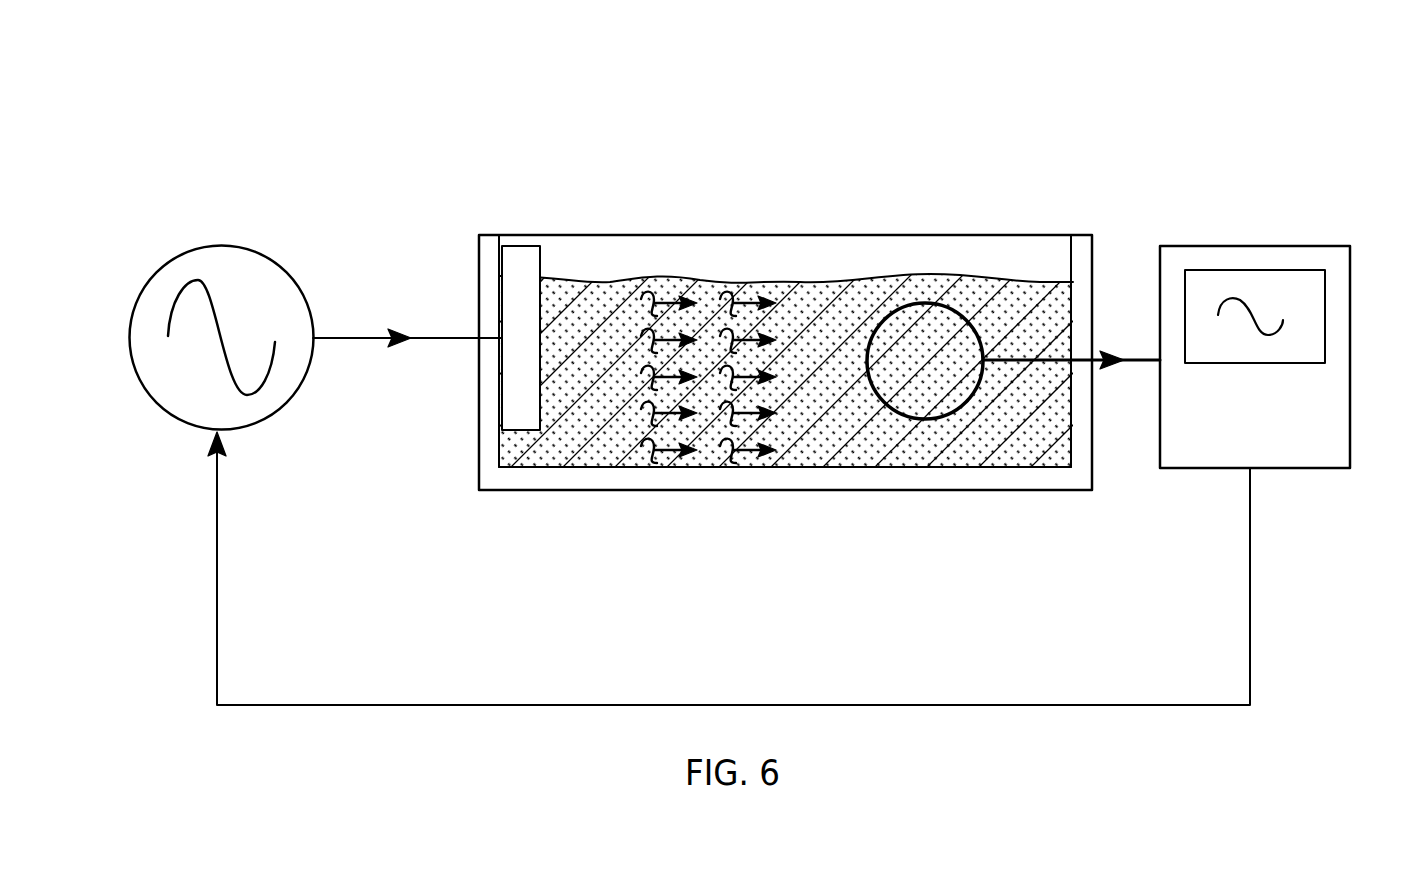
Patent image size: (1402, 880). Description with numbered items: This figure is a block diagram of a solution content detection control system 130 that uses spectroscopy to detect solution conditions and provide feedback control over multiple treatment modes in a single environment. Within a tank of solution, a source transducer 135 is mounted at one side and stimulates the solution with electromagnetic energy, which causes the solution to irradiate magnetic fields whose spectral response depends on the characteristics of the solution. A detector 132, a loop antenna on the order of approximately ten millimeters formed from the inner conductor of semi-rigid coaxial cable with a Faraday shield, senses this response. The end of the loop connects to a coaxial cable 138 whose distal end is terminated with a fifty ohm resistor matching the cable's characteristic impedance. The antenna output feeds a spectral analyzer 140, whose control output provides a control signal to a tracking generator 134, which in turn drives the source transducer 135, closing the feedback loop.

The control system 130 is at (863, 112).
The detector 132 is at (902, 420).
The tracking generator 134 is at (160, 410).
The source transducer 135 is at (540, 265).
The coaxial cable 138 is at (1128, 358).
The spectral analyzer 140 is at (1293, 246).